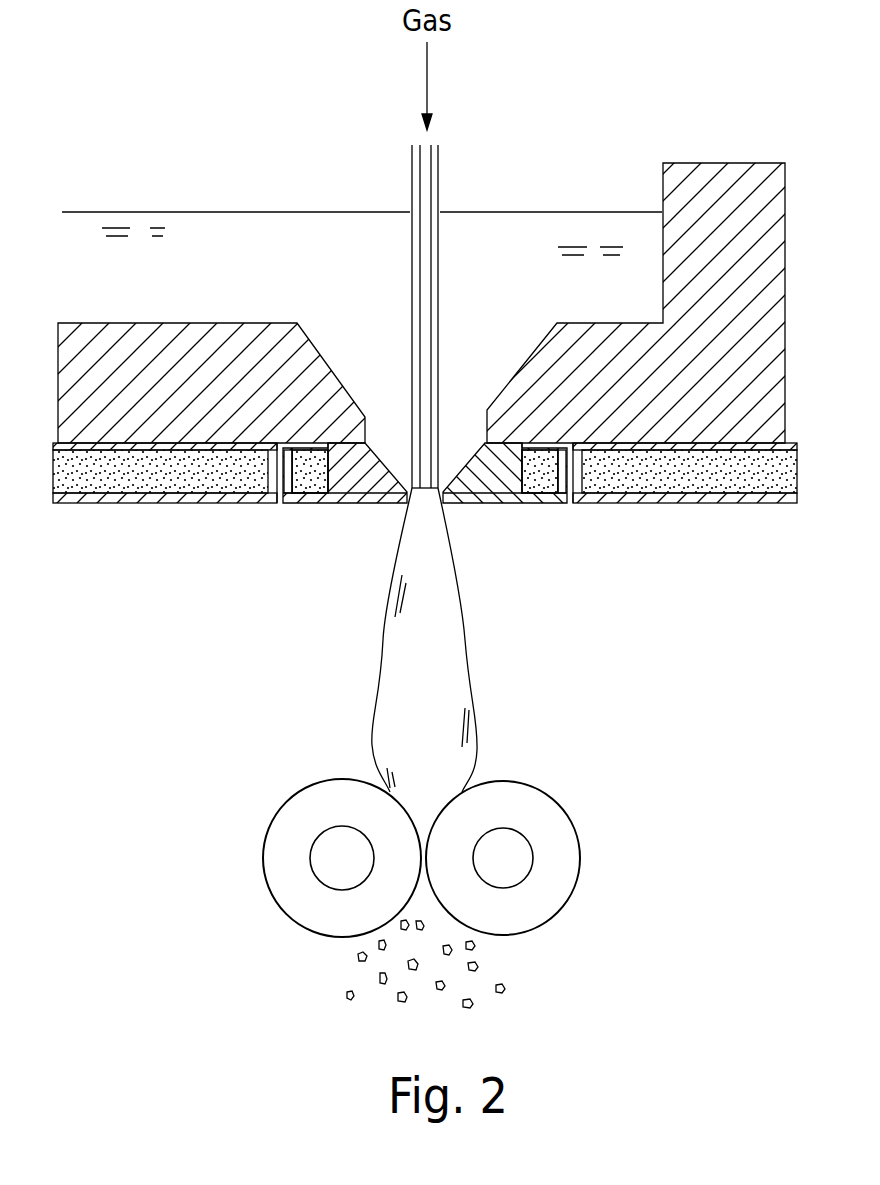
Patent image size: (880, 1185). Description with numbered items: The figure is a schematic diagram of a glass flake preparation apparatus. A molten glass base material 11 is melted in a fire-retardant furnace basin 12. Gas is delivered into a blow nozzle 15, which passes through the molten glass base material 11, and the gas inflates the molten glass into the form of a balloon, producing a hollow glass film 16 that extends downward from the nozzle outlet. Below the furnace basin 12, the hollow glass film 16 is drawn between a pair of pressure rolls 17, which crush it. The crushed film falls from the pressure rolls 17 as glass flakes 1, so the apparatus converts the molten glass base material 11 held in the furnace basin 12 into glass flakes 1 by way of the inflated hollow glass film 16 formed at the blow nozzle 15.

The glass flakes 1 is at (508, 988).
The molten glass base material 11 is at (222, 230).
The fire-retardant furnace basin 12 is at (738, 178).
The blow nozzle 15 is at (438, 170).
The hollow glass film 16 is at (461, 692).
The pressure rolls 17 is at (555, 857).